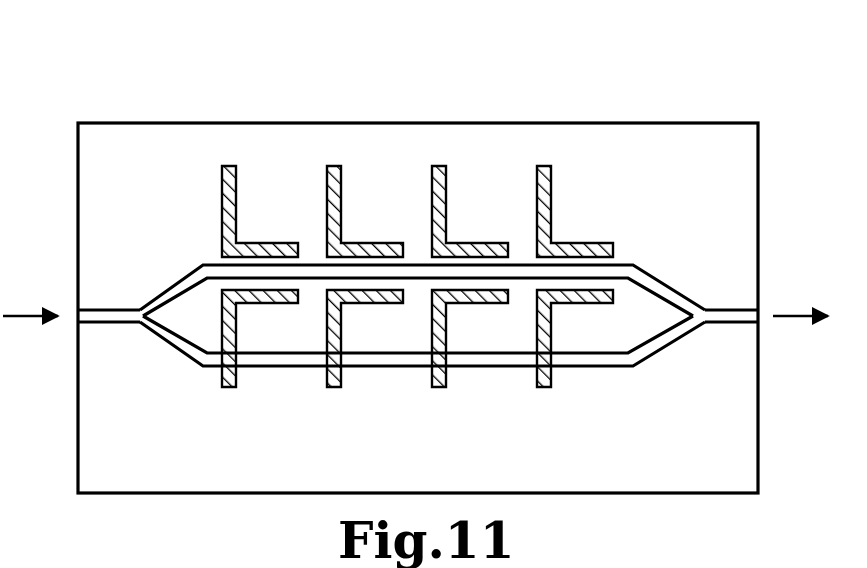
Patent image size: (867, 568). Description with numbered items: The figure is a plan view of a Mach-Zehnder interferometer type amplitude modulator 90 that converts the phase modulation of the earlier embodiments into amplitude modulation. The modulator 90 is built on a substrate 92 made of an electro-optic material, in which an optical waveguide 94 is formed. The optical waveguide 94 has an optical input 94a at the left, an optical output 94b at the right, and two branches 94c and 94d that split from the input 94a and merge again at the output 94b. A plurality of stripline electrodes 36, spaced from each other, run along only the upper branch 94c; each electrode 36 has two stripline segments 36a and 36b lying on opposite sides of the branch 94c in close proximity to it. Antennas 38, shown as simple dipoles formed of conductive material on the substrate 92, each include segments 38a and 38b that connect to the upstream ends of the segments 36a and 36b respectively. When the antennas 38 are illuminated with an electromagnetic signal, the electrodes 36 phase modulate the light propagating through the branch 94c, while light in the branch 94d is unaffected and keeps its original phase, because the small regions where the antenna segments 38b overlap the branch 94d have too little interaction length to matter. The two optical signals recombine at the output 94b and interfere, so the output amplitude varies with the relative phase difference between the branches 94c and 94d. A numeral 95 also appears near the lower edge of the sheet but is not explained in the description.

The Mach-Zehnder interferometer type amplitude modulator 90 is at (176, 100).
The substrate 92 is at (416, 122).
The optical waveguide 94 is at (152, 362).
The optical input 94a is at (104, 312).
The optical output 94b is at (723, 312).
The branch 94c is at (517, 270).
The branch 94d is at (497, 362).
The antenna 38 is at (214, 184).
The antenna segment 38a is at (222, 228).
The antenna segment 38b is at (237, 323).
The stripline electrode 36 is at (275, 230).
The stripline segment 36a is at (386, 245).
The stripline segment 36b is at (363, 306).
The electrode structure 95 is at (103, 559).